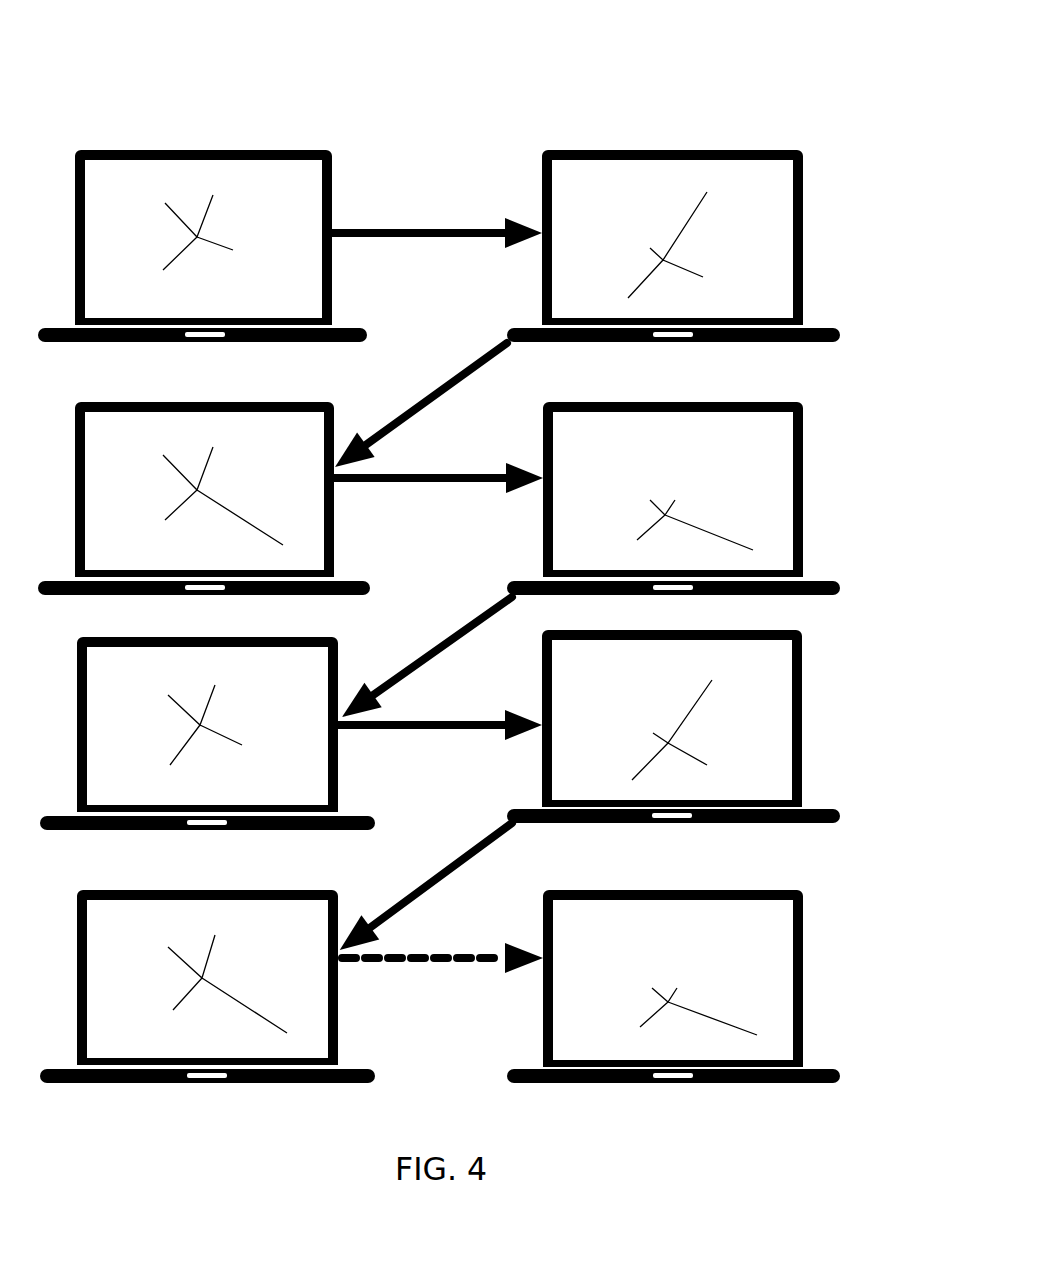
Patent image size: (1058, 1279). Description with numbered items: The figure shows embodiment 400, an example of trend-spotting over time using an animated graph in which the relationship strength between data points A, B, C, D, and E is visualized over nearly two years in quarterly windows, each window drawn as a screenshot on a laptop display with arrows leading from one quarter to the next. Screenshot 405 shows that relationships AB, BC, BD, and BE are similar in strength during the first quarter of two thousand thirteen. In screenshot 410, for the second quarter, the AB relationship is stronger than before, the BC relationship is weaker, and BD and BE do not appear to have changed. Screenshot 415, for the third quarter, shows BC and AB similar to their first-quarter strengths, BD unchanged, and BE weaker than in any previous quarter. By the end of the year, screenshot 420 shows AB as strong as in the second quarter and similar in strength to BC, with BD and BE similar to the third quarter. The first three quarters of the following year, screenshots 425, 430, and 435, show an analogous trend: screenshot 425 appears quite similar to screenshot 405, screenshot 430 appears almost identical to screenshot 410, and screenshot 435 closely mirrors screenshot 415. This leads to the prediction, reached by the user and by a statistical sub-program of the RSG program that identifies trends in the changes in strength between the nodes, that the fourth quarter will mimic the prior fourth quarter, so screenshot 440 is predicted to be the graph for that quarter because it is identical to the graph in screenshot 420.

The embodiment 400 is at (726, 122).
The screenshot 405 is at (335, 262).
The screenshot 410 is at (805, 228).
The screenshot 415 is at (336, 532).
The screenshot 420 is at (805, 490).
The screenshot 425 is at (340, 760).
The screenshot 430 is at (803, 713).
The screenshot 435 is at (340, 1005).
The screenshot 440 is at (805, 972).